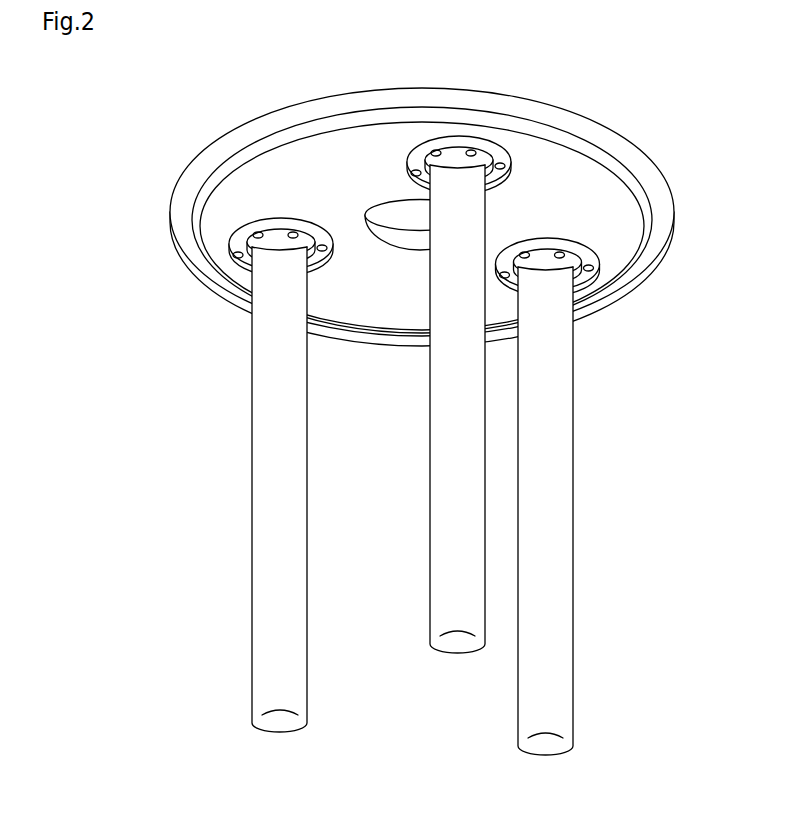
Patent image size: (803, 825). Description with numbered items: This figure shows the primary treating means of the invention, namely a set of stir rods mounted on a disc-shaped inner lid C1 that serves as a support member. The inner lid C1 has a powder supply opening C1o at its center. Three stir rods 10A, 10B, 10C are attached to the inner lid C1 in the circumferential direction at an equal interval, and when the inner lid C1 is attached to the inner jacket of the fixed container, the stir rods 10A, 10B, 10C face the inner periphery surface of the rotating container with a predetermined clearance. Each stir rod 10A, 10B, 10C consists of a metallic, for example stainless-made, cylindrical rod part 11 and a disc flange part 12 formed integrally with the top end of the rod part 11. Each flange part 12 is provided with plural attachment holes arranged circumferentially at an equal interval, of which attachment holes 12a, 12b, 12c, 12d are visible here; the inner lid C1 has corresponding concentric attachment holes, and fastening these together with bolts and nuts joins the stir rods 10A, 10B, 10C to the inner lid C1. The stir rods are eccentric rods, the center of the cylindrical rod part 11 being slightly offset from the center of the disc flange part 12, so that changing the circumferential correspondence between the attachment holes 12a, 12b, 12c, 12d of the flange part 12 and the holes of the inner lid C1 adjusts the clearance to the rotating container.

The inner lid C1 is at (613, 131).
The powder supply opening C1o is at (390, 208).
The stir rod 10A is at (233, 489).
The stir rod 10B is at (440, 610).
The stir rod 10C is at (558, 710).
The cylindrical rod part 11 is at (262, 461).
The disc flange part 12 is at (266, 218).
The attachment hole 12a is at (236, 254).
The attachment hole 12b is at (256, 232).
The attachment hole 12c is at (291, 231).
The attachment hole 12d is at (324, 250).